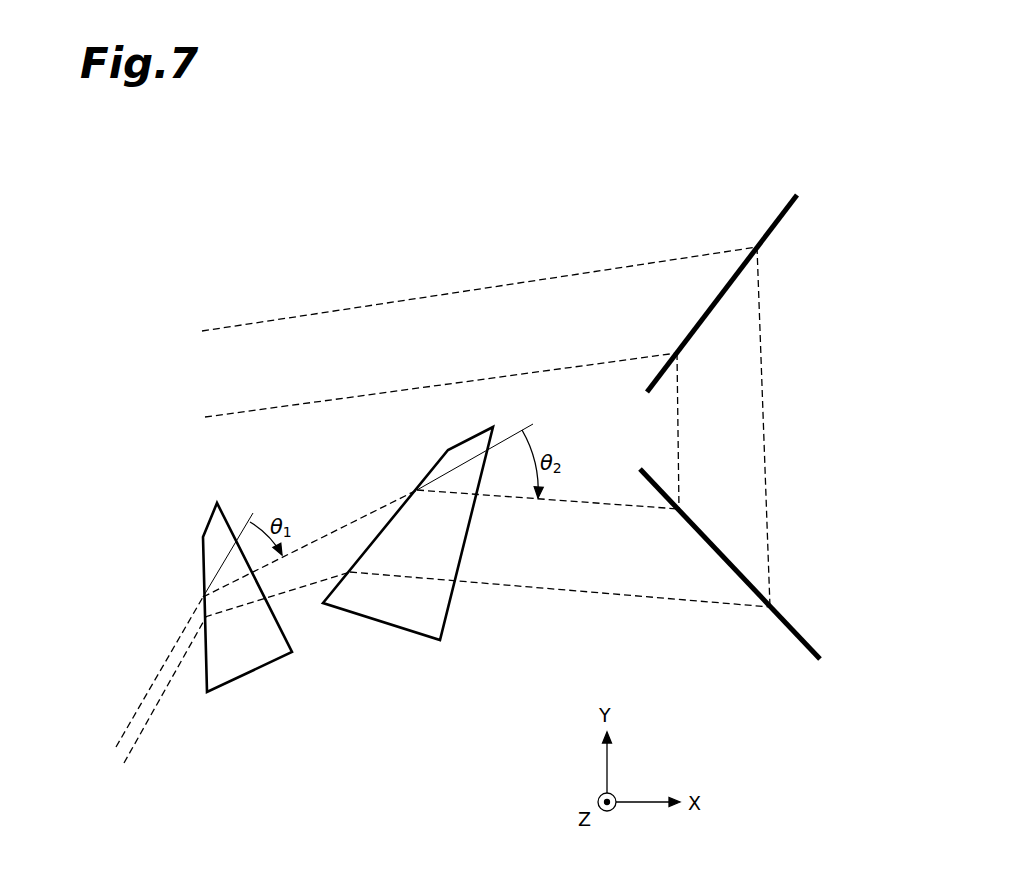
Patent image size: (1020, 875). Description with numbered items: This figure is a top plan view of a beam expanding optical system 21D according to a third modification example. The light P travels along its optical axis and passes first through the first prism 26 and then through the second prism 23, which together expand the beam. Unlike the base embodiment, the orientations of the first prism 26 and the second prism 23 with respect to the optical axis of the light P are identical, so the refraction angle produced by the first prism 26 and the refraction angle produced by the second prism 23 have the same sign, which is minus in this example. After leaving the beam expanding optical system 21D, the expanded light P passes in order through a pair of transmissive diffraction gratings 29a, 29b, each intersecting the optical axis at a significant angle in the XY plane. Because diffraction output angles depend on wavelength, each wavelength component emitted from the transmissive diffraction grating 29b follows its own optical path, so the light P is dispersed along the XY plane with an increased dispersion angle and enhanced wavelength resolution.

The transmissive diffraction grating 29a is at (797, 632).
The transmissive diffraction grating 29b is at (780, 223).
The first prism 26 is at (250, 678).
The second prism 23 is at (371, 617).
The beam expanding optical system 21D is at (348, 620).
The light P is at (147, 722).